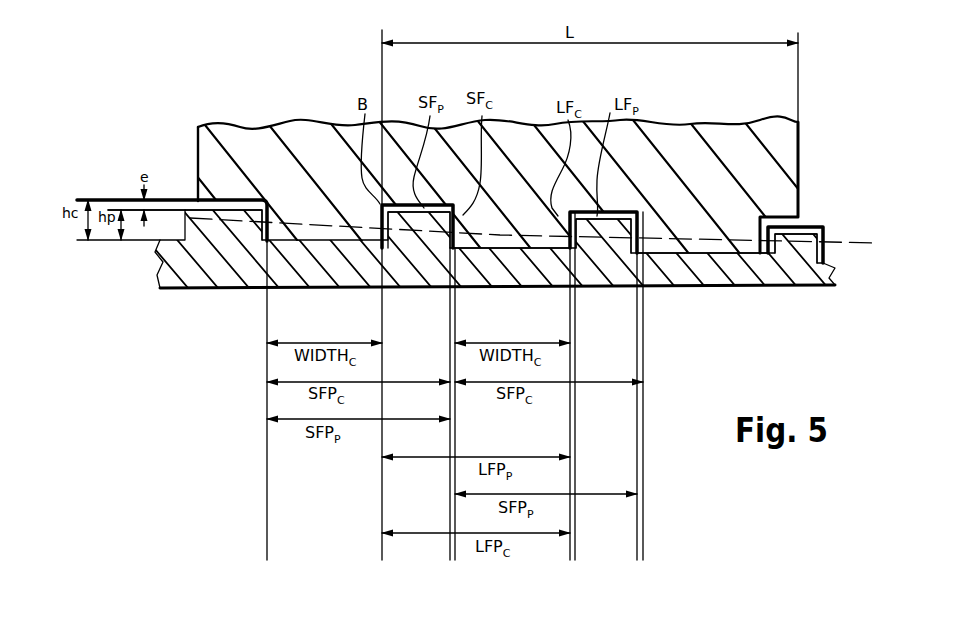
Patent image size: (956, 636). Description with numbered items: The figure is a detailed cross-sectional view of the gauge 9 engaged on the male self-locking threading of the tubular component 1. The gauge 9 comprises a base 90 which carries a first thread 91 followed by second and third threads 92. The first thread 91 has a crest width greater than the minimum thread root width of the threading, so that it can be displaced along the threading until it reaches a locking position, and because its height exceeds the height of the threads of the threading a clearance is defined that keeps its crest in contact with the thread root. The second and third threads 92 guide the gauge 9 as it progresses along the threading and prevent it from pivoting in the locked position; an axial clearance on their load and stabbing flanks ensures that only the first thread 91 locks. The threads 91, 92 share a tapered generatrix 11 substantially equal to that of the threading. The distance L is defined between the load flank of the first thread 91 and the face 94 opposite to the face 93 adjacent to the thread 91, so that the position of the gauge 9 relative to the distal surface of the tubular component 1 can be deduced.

The tubular component 1 is at (188, 304).
The gauge 9 is at (497, 193).
The tapered generatrix 11 is at (862, 243).
The base 90 is at (320, 143).
The first thread 91 is at (307, 213).
The second and third threads 92 is at (503, 225).
The face adjacent to the thread 93 is at (198, 155).
The face opposite to the face adjacent to the thread 94 is at (800, 163).